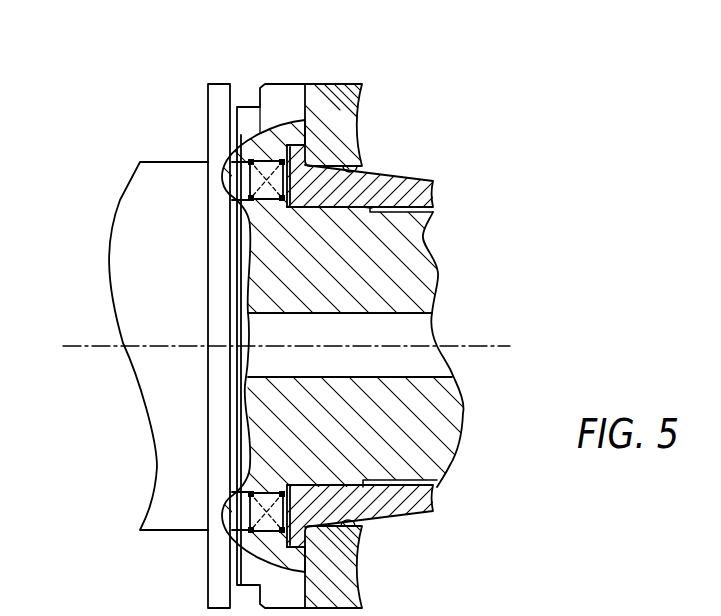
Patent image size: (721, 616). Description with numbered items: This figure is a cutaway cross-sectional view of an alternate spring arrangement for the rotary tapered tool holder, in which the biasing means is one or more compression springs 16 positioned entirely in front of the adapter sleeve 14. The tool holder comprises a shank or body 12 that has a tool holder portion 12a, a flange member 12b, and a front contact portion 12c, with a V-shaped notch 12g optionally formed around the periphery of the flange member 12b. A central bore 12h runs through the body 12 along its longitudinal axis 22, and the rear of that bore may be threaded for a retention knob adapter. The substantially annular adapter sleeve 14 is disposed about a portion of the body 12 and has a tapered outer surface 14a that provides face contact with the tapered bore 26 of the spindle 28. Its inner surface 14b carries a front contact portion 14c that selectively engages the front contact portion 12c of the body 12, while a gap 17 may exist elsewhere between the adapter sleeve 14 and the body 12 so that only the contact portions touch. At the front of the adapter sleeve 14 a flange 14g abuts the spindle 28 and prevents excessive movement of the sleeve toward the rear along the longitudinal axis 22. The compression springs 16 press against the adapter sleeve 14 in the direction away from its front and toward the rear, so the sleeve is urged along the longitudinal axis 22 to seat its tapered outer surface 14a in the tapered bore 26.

The body 12 is at (360, 308).
The tool holder portion 12a is at (152, 162).
The flange member 12b is at (292, 83).
The front contact portion 12c is at (372, 208).
The V-shaped notch 12g is at (247, 106).
The central bore 12h is at (410, 325).
The adapter sleeve 14 is at (331, 317).
The tapered outer surface 14a is at (423, 181).
The inner surface 14b is at (413, 213).
The front contact portion 14c is at (338, 206).
The flange 14g is at (298, 148).
The compression spring 16 is at (253, 178).
The gap 17 is at (418, 163).
The longitudinal axis 22 is at (488, 347).
The tapered bore 26 is at (362, 170).
The spindle 28 is at (347, 110).